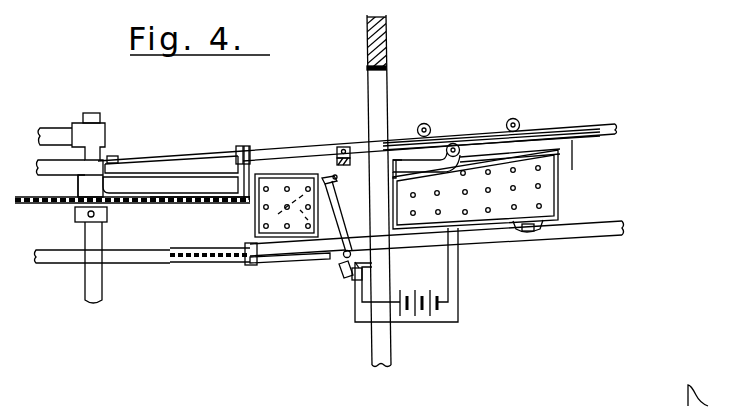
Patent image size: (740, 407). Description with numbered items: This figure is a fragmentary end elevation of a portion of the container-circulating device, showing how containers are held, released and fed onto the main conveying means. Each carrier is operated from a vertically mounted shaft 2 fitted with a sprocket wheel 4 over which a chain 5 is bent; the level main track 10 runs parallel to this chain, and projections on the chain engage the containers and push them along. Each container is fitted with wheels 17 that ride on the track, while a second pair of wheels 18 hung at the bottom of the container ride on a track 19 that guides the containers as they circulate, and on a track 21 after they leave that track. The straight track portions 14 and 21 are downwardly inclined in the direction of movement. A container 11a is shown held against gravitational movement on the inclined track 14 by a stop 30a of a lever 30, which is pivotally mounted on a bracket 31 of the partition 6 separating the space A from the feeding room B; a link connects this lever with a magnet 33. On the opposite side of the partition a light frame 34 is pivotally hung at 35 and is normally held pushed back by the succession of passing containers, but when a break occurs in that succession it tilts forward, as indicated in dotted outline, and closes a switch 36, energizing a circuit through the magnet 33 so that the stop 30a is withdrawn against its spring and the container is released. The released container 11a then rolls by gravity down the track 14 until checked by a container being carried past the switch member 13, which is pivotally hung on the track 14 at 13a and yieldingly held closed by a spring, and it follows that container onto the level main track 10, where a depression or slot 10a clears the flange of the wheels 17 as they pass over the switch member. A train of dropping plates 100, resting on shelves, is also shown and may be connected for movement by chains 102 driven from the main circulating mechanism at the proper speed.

The vertically mounted shaft 2 is at (100, 118).
The sprocket wheel 4 is at (42, 204).
The chain 5 is at (206, 204).
The partition 6 is at (370, 356).
The track 10 is at (198, 166).
The slot 10a is at (113, 156).
The container 11a is at (495, 216).
The switch member 13 is at (153, 158).
The pivot of switch member 13a is at (166, 159).
The track 14 is at (558, 126).
The wheels 17 is at (246, 148).
The wheels 18 is at (246, 263).
The track 19 is at (138, 258).
The track 21 is at (608, 223).
The lever 30 is at (582, 165).
The stop 30a is at (412, 153).
The bracket 31 is at (491, 156).
The magnet 33 is at (455, 143).
The light frame 34 is at (334, 212).
The pivot of frame 35 is at (343, 259).
The switch 36 is at (356, 282).
The dropping plates 100 is at (298, 264).
The chains 102 is at (215, 250).